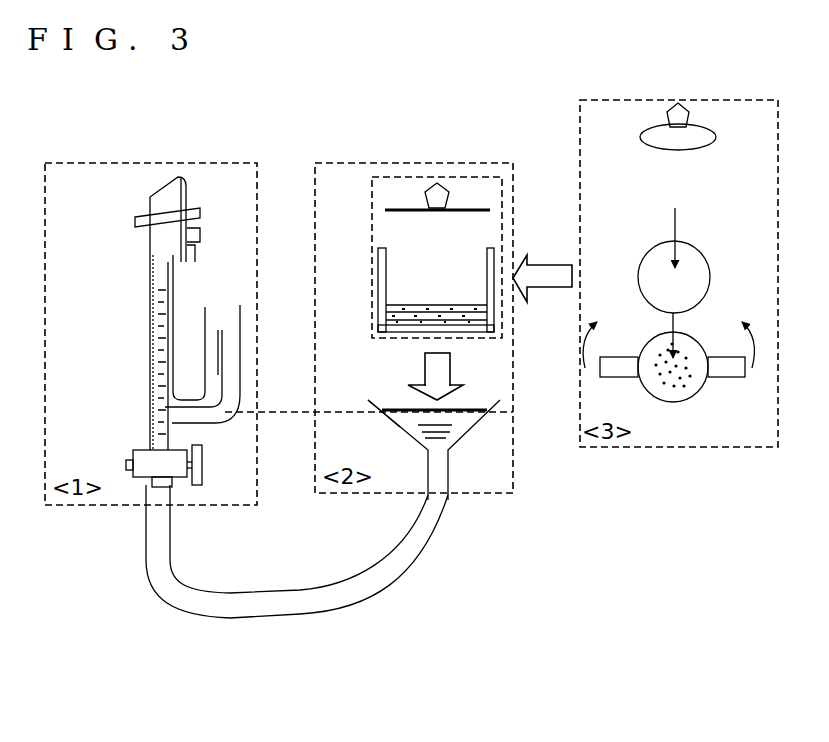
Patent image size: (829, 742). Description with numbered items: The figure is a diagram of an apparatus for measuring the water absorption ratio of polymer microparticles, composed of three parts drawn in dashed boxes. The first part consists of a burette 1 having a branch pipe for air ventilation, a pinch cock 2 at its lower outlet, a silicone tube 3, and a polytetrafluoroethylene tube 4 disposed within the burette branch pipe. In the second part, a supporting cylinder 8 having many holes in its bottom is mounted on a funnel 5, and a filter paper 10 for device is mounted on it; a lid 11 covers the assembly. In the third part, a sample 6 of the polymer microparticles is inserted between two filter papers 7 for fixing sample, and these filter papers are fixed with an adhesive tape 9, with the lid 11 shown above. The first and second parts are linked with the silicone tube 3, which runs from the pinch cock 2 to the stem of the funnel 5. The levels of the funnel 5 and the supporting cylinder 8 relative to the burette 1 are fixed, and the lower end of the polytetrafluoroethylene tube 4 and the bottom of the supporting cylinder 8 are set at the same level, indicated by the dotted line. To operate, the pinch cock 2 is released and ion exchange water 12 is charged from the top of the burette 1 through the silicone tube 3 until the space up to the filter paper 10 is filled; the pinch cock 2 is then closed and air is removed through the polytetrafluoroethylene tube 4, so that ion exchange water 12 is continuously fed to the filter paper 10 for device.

The burette 1 is at (147, 347).
The pinch cock 2 is at (133, 217).
The silicone tube 3 is at (207, 300).
The polytetrafluoroethylene tube 4 is at (221, 335).
The funnel 5 is at (400, 436).
The sample (polymer microparticles) 6 is at (378, 320).
The filter paper for fixing sample 7 is at (438, 302).
The supporting cylinder 8 is at (383, 394).
The adhesive tape 9 is at (374, 275).
The filter paper for device 10 is at (456, 414).
The lid 11 is at (550, 171).
The ion exchange water 12 is at (253, 612).